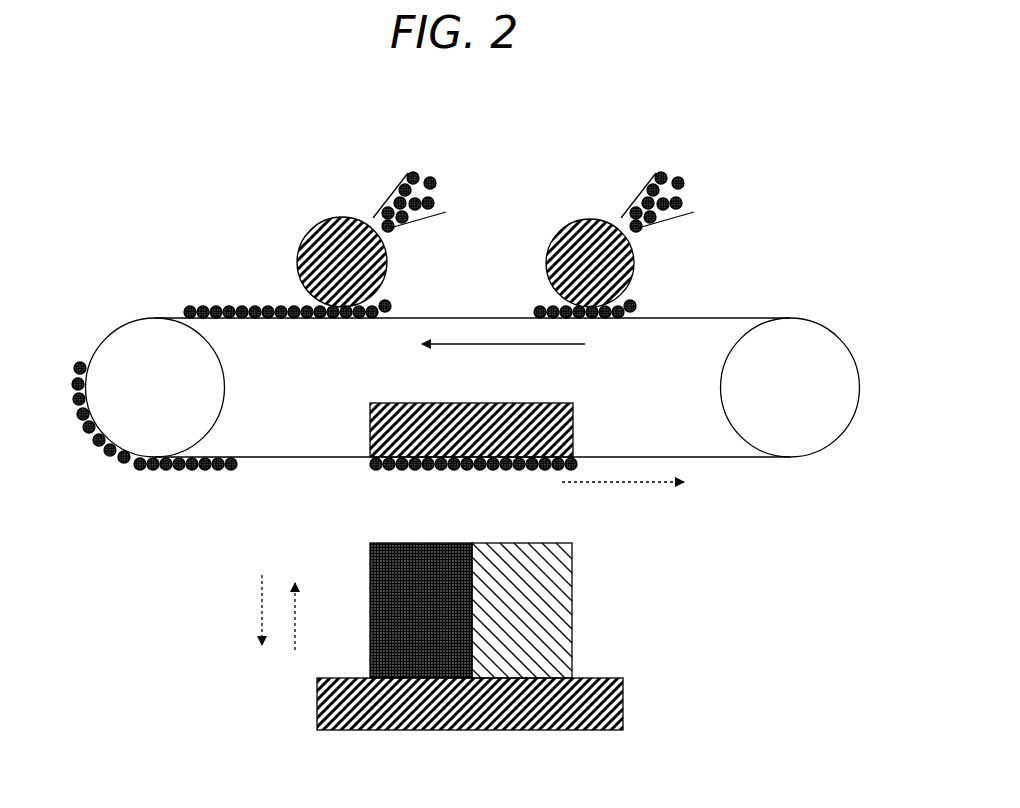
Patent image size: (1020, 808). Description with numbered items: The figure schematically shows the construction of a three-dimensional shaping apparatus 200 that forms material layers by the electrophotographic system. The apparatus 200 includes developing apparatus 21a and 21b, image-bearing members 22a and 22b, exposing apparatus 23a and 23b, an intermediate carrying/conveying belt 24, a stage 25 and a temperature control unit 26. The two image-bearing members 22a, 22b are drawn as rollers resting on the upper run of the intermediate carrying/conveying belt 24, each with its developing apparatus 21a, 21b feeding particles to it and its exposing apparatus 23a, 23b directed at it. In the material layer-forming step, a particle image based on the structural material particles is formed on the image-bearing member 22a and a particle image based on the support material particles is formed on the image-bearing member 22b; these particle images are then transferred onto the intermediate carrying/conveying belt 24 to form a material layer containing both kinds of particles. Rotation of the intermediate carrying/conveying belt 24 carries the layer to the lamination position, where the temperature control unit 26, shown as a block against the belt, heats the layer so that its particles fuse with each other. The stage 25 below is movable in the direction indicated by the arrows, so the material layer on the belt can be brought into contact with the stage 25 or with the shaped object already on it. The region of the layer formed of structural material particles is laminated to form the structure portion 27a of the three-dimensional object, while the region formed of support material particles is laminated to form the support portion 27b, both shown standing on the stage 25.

The three-dimensional shaping apparatus 200 is at (150, 150).
The developing apparatus 21a is at (446, 160).
The developing apparatus 21b is at (694, 160).
The image-bearing member 22a is at (300, 262).
The image-bearing member 22b is at (548, 262).
The exposing apparatus 23a is at (346, 196).
The exposing apparatus 23b is at (597, 196).
The intermediate carrying/conveying belt 24 is at (736, 318).
The stage 25 is at (625, 703).
The temperature control unit 26 is at (575, 425).
The structure portion 27a is at (384, 562).
The support portion 27b is at (560, 612).